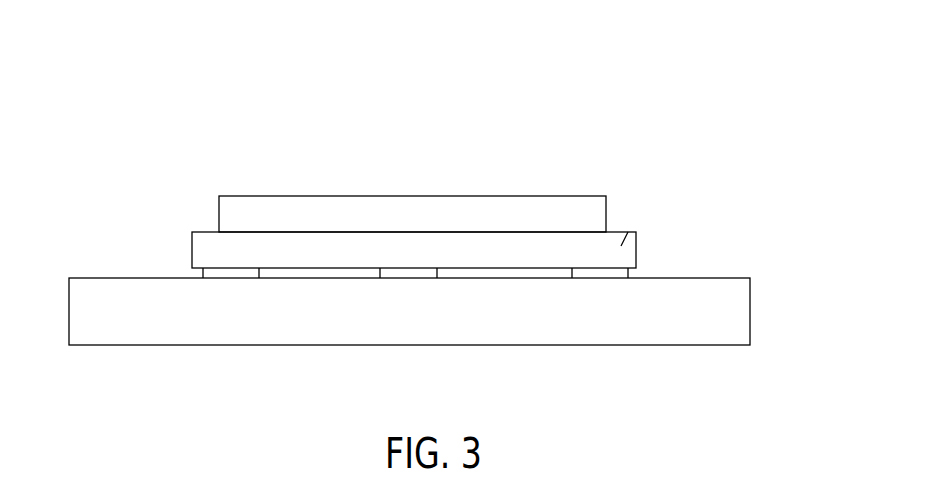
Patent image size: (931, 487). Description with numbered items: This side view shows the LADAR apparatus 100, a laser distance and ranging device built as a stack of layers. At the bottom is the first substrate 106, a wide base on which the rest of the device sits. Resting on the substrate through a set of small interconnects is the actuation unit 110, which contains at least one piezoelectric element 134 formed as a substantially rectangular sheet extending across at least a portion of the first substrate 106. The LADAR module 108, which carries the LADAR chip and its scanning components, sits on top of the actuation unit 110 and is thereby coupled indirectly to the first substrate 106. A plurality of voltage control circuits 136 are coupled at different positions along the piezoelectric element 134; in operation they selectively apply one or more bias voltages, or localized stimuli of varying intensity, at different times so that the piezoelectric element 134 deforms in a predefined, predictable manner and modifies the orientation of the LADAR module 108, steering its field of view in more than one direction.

The LADAR apparatus 100 is at (153, 72).
The first substrate 106 is at (751, 312).
The LADAR module 108 is at (626, 180).
The actuation unit 110 is at (662, 237).
The piezoelectric element 134 is at (621, 246).
The voltage control circuits 136 is at (203, 275).